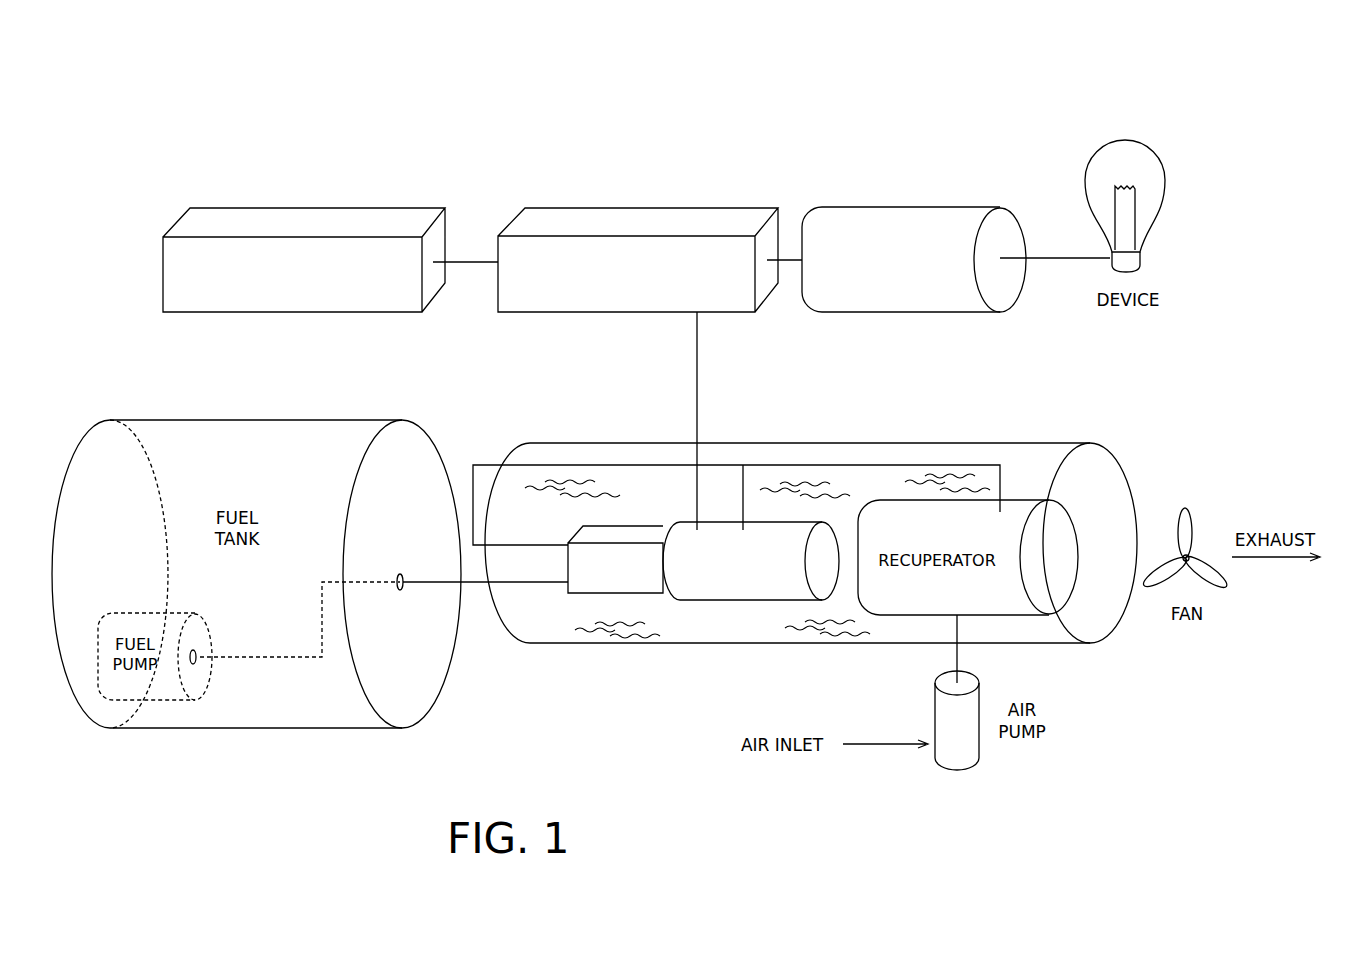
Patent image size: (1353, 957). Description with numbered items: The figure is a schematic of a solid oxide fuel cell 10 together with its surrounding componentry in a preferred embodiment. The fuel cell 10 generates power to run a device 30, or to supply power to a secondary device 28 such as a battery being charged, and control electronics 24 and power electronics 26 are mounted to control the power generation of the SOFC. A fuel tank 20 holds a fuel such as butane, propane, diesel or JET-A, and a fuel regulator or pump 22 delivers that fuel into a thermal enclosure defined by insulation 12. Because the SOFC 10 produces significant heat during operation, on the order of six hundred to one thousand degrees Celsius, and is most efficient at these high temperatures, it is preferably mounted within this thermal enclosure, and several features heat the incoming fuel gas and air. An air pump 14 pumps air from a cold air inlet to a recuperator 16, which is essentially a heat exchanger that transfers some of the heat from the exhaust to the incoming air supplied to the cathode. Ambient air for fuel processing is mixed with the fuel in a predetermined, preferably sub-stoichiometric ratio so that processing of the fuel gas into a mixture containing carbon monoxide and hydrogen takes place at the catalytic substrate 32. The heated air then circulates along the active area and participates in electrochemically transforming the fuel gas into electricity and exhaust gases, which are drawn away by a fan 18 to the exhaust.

The solid oxide fuel cell 10 is at (790, 585).
The insulation 12 is at (612, 632).
The air pump 14 is at (953, 755).
The recuperator 16 is at (1007, 605).
The fan 18 is at (1188, 520).
The fuel tank 20 is at (212, 443).
The fuel regulator or pump 22 is at (157, 695).
The control electronics 24 is at (322, 213).
The power electronics 26 is at (650, 215).
The secondary device 28 is at (893, 222).
The device 30 is at (1128, 163).
The catalytic substrate 32 is at (583, 583).